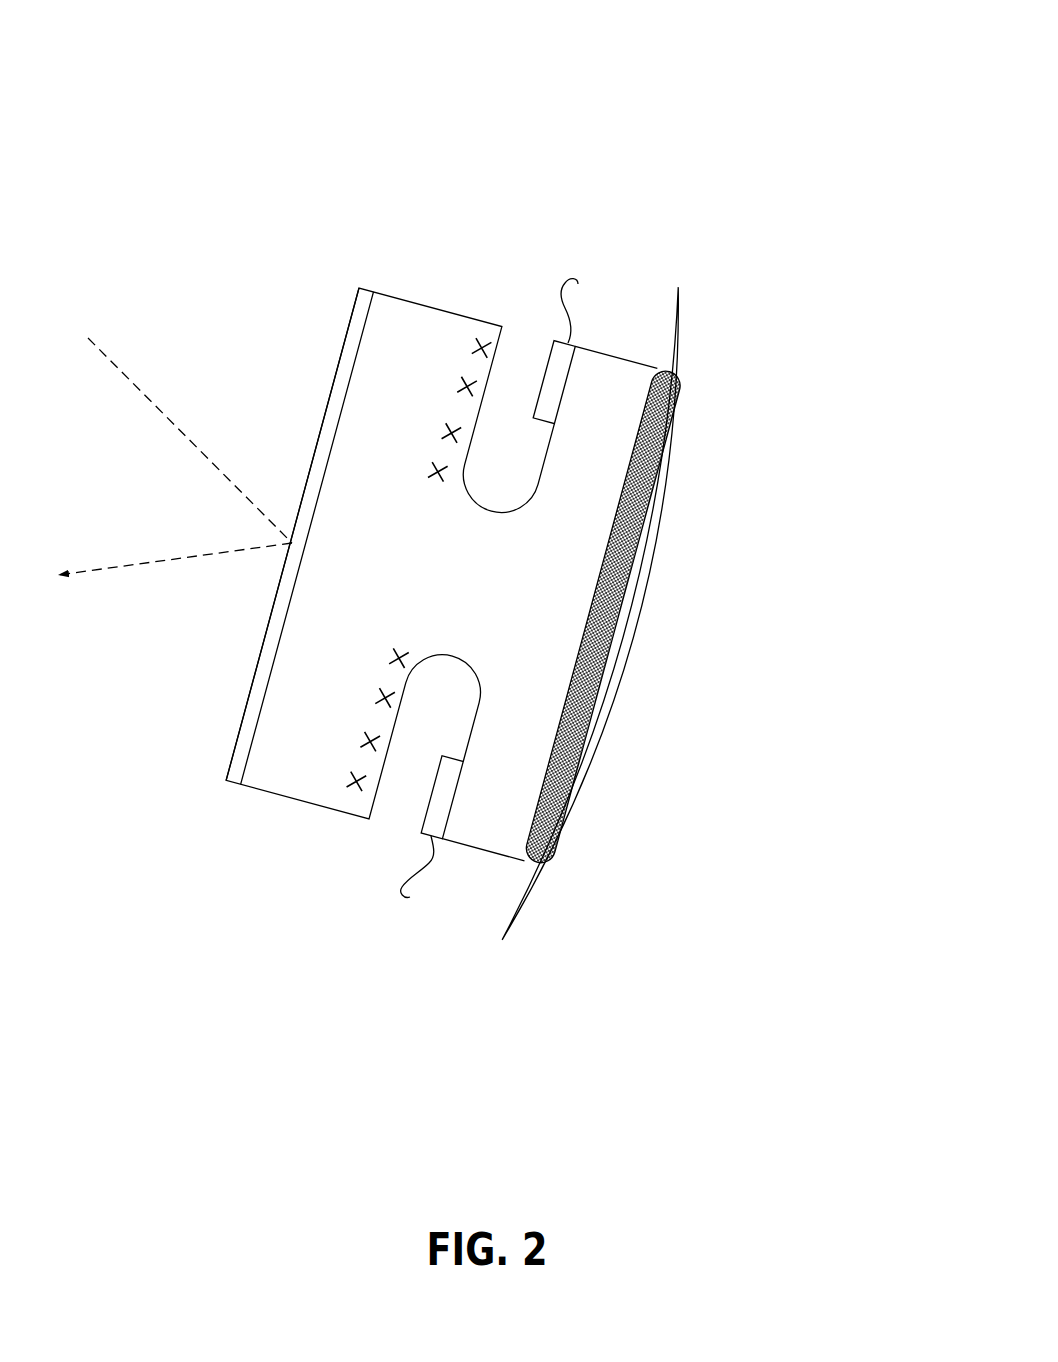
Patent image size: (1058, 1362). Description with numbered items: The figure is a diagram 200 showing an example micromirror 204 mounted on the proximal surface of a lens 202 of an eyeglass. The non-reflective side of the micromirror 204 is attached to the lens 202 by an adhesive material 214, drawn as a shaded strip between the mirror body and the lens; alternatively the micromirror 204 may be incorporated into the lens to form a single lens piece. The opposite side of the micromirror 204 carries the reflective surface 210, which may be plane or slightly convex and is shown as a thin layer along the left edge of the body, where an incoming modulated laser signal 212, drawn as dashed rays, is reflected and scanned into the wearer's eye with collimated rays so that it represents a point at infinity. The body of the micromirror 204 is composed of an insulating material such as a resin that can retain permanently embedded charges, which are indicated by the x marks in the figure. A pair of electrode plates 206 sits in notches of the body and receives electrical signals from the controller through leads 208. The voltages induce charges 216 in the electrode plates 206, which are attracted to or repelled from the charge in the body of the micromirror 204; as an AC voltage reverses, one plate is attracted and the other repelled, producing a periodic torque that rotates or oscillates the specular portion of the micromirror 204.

The diagram 200 is at (725, 62).
The lens 202 is at (677, 284).
The micromirror 204 is at (490, 572).
The electrode plates 206 is at (548, 360).
The leads 208 is at (565, 298).
The reflective surface 210 is at (245, 680).
The modulated laser signal 212 is at (218, 520).
The adhesive material 214 is at (595, 708).
The charges 216 is at (463, 365).